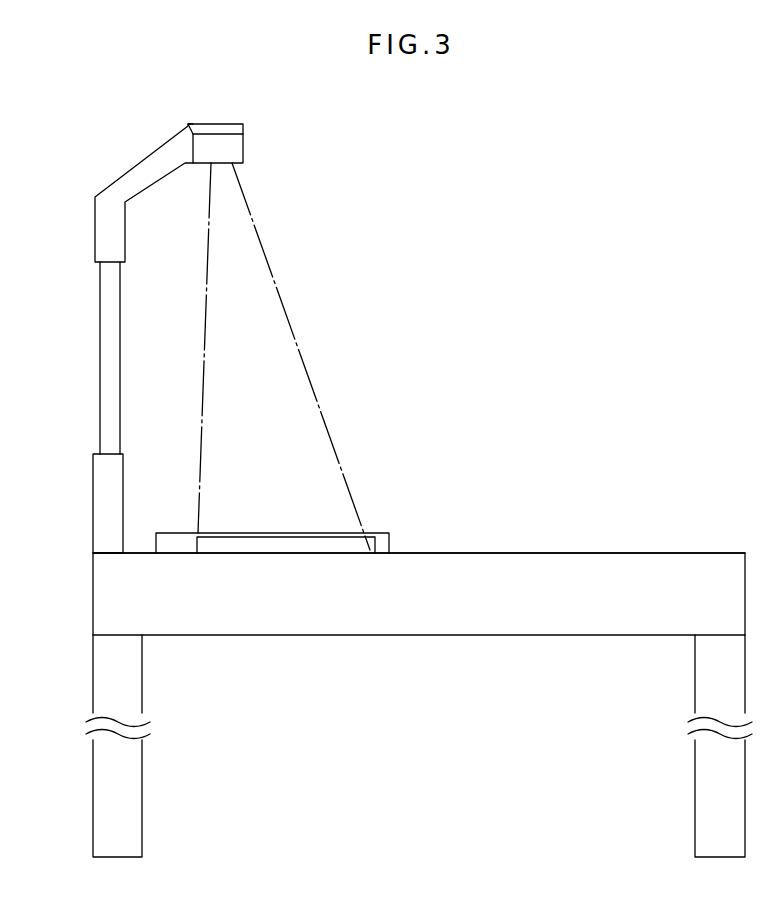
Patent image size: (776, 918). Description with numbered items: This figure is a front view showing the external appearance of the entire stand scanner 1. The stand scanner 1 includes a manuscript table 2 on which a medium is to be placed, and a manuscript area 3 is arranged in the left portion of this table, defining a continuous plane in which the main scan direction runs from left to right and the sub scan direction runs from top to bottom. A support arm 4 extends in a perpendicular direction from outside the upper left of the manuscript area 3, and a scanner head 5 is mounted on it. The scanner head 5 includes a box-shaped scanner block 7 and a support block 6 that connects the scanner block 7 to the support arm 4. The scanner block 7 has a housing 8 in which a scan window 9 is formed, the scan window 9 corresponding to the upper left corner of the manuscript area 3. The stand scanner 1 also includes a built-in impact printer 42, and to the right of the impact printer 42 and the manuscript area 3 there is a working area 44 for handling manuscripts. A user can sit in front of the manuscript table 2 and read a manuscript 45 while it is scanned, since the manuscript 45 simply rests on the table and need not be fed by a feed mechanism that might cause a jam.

The stand scanner 1 is at (603, 268).
The manuscript table 2 is at (715, 560).
The manuscript area 3 is at (290, 417).
The support arm 4 is at (105, 385).
The scanner head 5 is at (262, 148).
The support block 6 is at (125, 187).
The scanner block 7 is at (192, 123).
The housing 8 is at (227, 125).
The scan window 9 is at (221, 164).
The impact printer 42 is at (392, 537).
The working area 44 is at (575, 553).
The manuscript 45 is at (320, 540).